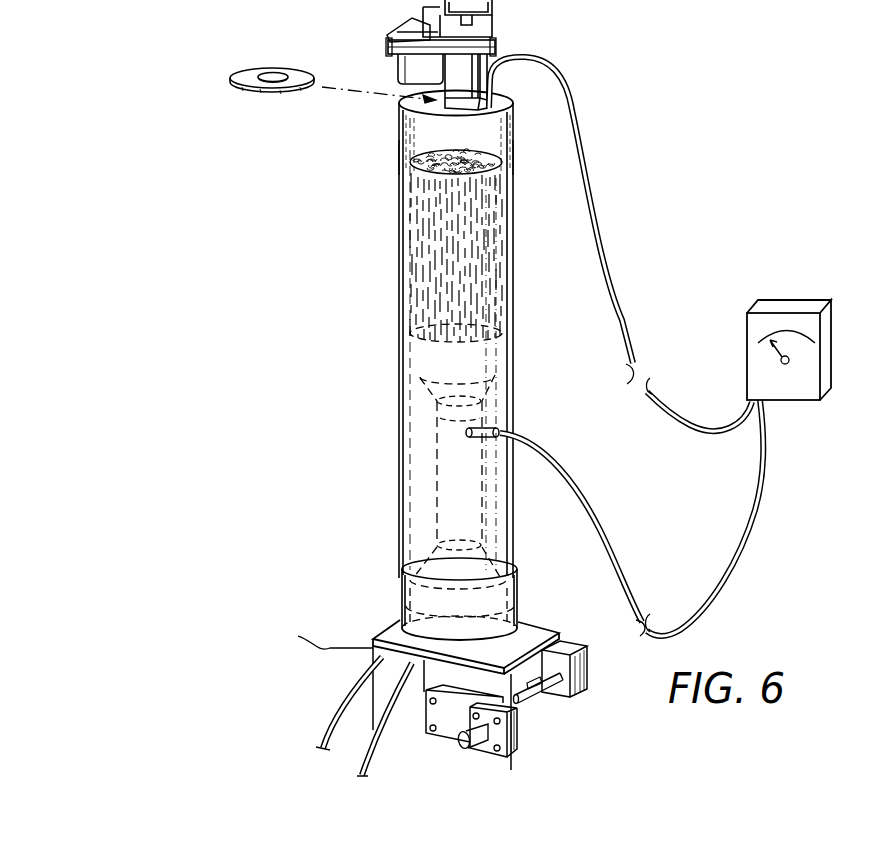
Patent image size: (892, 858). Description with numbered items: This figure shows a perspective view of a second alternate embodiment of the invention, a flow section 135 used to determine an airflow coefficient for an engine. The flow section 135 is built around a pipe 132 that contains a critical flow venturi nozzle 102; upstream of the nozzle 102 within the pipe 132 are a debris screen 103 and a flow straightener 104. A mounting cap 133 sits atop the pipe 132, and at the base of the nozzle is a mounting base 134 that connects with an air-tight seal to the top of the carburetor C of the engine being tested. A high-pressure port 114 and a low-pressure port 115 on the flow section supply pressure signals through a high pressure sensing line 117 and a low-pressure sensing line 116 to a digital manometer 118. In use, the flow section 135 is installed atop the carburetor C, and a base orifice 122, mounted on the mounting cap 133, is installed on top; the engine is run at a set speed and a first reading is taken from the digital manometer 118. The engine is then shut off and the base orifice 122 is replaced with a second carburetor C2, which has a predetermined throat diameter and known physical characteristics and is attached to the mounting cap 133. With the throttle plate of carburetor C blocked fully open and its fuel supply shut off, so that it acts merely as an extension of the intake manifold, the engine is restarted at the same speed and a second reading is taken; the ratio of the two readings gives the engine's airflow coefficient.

The critical flow venturi nozzle 102 is at (436, 467).
The debris screen 103 is at (412, 325).
The flow straightener 104 is at (405, 258).
The high-pressure port 114 is at (487, 112).
The low-pressure port 115 is at (498, 430).
The low-pressure sensing line 116 is at (580, 472).
The high pressure sensing line 117 is at (622, 320).
The digital manometer 118 is at (782, 302).
The base orifice 122 is at (253, 68).
The pipe 132 is at (512, 532).
The mounting cap 133 is at (400, 138).
The mounting base 134 is at (401, 602).
The flow section 135 is at (237, 599).
The carburetor C is at (326, 638).
The carburetor C2 is at (495, 12).